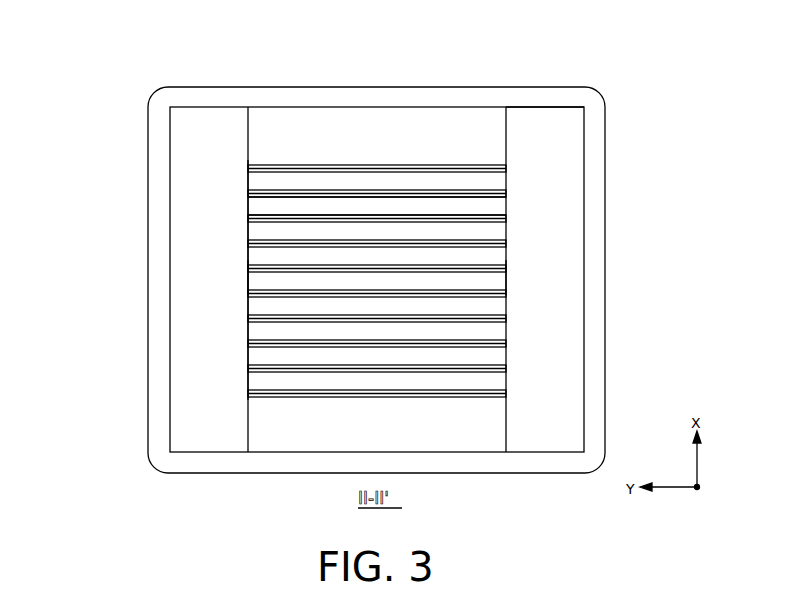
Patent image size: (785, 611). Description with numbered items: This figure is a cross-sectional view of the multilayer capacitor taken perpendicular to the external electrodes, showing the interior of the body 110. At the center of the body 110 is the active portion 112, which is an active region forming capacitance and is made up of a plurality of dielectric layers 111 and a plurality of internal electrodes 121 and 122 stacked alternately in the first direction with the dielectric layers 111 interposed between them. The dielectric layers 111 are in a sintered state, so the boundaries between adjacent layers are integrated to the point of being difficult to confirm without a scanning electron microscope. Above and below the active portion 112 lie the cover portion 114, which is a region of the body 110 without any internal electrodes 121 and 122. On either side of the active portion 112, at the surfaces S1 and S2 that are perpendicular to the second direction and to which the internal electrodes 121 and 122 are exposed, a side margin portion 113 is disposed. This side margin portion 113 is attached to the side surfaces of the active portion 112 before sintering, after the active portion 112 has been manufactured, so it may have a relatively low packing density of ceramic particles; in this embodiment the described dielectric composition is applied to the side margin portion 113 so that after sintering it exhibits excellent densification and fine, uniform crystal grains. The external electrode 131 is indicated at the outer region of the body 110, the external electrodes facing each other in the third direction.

The body 110 is at (335, 100).
The dielectric layer 111 is at (506, 192).
The active portion 112 is at (248, 253).
The side margin portion 113 is at (203, 154).
The cover portion 114 is at (449, 118).
The internal electrode 121 is at (291, 165).
The internal electrode 122 is at (387, 190).
The external electrode 131 is at (523, 104).
The surface S1 is at (241, 277).
The surface S2 is at (513, 275).